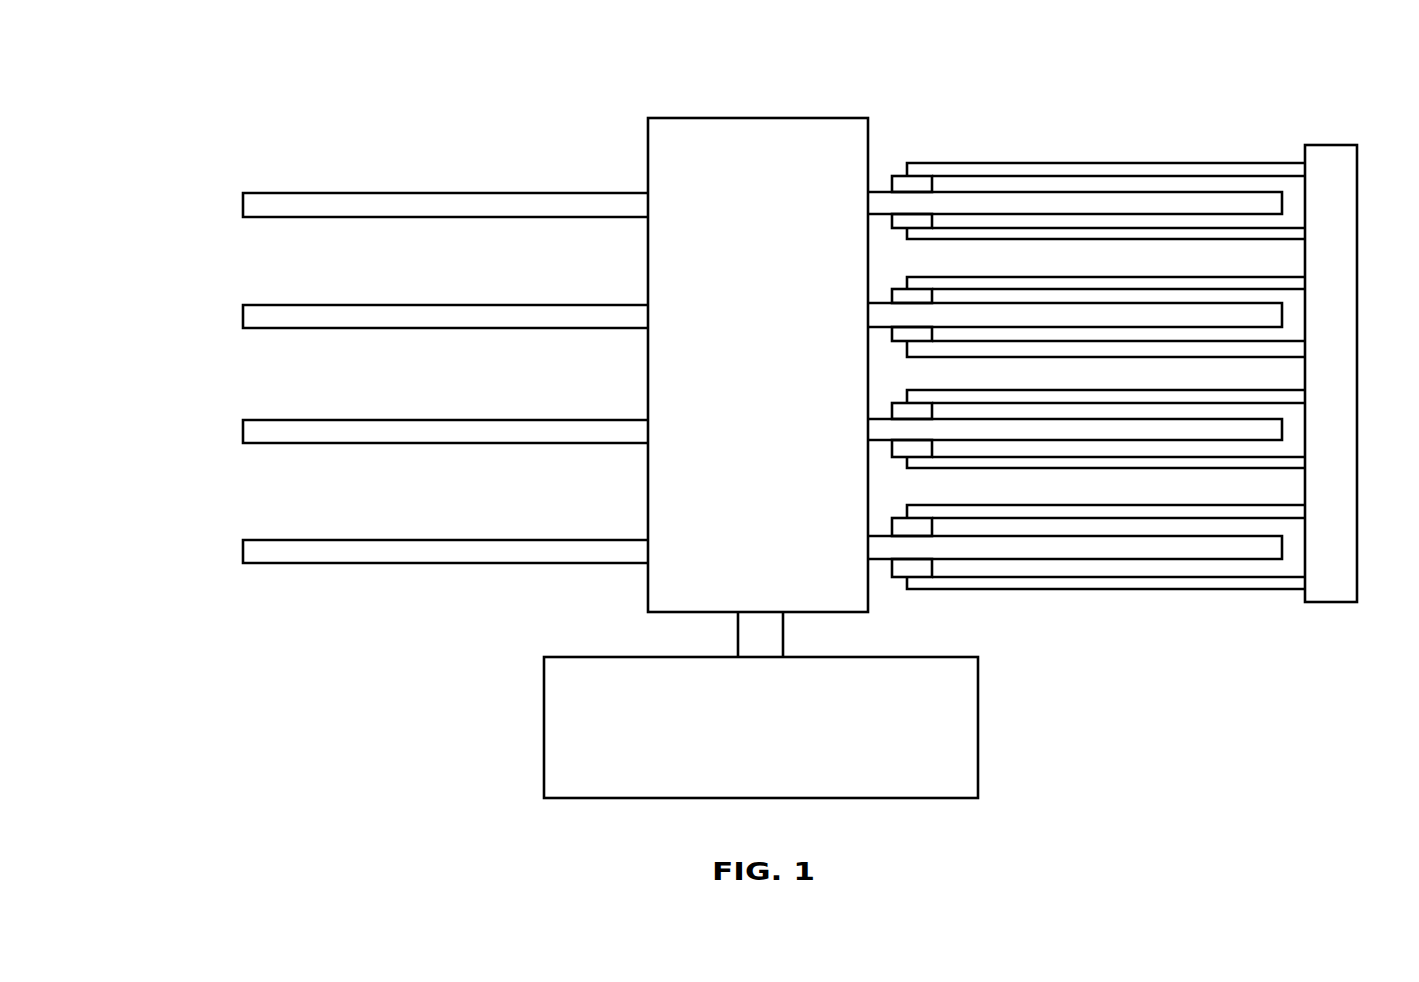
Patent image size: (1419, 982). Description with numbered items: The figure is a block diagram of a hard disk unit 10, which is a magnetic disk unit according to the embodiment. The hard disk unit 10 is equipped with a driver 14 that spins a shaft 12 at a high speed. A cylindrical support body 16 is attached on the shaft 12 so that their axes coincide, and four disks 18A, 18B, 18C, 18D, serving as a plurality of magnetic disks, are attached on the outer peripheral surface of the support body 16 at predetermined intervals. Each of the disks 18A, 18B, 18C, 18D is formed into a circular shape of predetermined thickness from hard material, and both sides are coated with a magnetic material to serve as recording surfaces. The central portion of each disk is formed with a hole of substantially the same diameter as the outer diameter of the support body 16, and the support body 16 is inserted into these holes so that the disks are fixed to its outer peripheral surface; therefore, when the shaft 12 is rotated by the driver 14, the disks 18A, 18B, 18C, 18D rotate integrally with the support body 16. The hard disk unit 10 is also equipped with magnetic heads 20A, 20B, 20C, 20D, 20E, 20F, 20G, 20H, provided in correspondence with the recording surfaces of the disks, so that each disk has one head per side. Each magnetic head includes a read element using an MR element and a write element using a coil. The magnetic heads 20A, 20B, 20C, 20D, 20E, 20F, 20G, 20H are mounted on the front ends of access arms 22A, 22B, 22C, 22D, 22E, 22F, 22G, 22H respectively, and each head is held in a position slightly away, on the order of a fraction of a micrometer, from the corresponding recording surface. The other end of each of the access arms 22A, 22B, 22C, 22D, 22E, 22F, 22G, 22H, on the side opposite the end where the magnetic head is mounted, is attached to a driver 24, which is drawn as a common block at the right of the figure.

The hard disk unit 10 is at (325, 133).
The shaft 12 is at (784, 637).
The driver 14 is at (979, 708).
The support body 16 is at (845, 118).
The disk 18A is at (243, 205).
The disk 18B is at (243, 317).
The disk 18C is at (243, 431).
The disk 18D is at (243, 551).
The magnetic head 20A is at (892, 184).
The magnetic head 20B is at (892, 226).
The magnetic head 20C is at (892, 297).
The magnetic head 20D is at (892, 339).
The magnetic head 20E is at (892, 413).
The magnetic head 20F is at (892, 453).
The magnetic head 20G is at (892, 529).
The magnetic head 20H is at (892, 571).
The access arm 22A is at (1080, 163).
The access arm 22B is at (1003, 240).
The access arm 22C is at (1131, 277).
The access arm 22D is at (1003, 357).
The access arm 22E is at (1145, 390).
The access arm 22F is at (1015, 468).
The access arm 22G is at (1147, 505).
The access arm 22H is at (1082, 590).
The driver 24 is at (1360, 258).